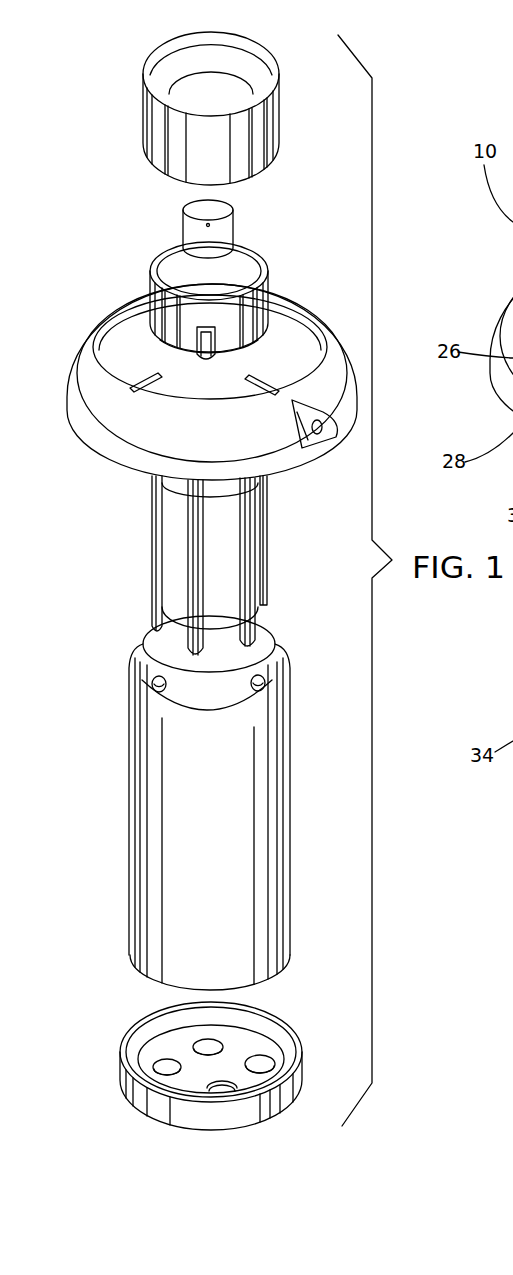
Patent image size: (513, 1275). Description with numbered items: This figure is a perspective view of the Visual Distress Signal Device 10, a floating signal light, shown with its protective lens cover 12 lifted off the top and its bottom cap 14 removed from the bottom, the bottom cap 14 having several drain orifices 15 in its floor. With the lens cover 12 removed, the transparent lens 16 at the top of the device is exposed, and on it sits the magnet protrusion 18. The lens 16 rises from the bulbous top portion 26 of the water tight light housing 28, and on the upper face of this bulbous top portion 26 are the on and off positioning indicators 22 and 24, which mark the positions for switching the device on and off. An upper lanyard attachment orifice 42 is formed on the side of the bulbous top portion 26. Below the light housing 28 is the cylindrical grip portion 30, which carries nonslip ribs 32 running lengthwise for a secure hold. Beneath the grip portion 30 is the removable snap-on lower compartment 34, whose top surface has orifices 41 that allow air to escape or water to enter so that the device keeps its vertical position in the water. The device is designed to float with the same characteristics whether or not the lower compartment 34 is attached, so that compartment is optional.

The Visual Distress Signal Device 10 is at (100, 207).
The protective lens cover 12 is at (228, 62).
The bottom cap 14 is at (272, 1037).
The drain orifices 15 is at (168, 1067).
The transparent lens 16 is at (245, 265).
The magnet protrusion 18 is at (203, 343).
The on positioning indicator 22 is at (120, 383).
The off positioning indicator 24 is at (200, 356).
The bulbous top portion 26 is at (123, 413).
The water tight light housing 28 is at (175, 470).
The cylindrical grip portion 30 is at (172, 548).
The nonslip ribs 32 is at (245, 573).
The removable snap-on lower compartment 34 is at (177, 792).
The orifices 41 is at (155, 684).
The upper lanyard attachment orifice 42 is at (303, 440).